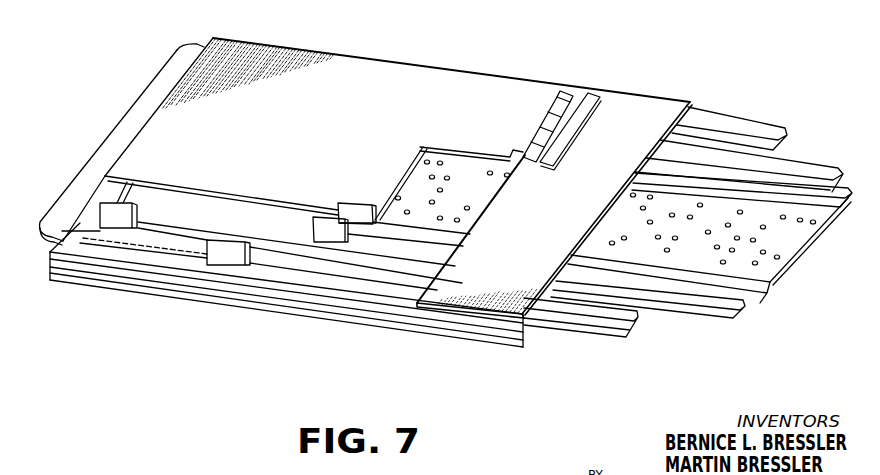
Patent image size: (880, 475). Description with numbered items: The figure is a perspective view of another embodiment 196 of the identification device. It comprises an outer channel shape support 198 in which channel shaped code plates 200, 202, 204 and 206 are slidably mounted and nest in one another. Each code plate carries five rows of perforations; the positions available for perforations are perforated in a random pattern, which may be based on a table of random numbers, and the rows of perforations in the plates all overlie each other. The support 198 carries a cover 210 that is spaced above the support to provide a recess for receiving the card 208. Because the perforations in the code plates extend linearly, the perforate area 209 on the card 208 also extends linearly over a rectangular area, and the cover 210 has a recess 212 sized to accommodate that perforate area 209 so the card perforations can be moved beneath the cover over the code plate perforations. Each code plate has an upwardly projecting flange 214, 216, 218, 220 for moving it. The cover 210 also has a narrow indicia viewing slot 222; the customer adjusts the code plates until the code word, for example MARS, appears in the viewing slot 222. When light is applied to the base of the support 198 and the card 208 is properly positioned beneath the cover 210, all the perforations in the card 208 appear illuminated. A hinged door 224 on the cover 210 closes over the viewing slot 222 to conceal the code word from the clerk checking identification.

The embodiment 196 is at (263, 32).
The outer channel shape support 198 is at (523, 347).
The channel shaped code plate 200 is at (570, 314).
The channel shaped code plate 202 is at (417, 274).
The channel shaped code plate 204 is at (688, 298).
The channel shaped code plate 206 is at (722, 284).
The card 208 is at (158, 82).
The perforate area 209 is at (452, 168).
The cover 210 is at (278, 108).
The recess 212 is at (415, 167).
The upwardly projecting flange 214 is at (223, 258).
The upwardly projecting flange 216 is at (113, 218).
The upwardly projecting flange 218 is at (323, 235).
The upwardly projecting flange 220 is at (358, 218).
The indicia viewing slot 222 is at (570, 96).
The hinged door 224 is at (590, 100).